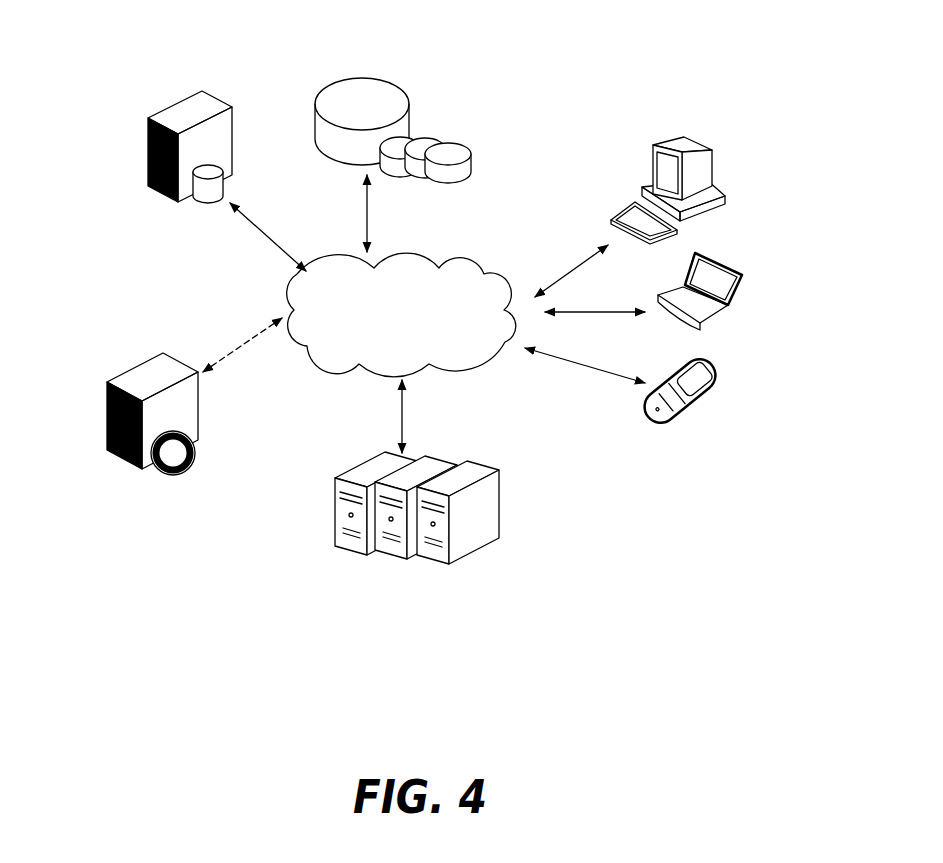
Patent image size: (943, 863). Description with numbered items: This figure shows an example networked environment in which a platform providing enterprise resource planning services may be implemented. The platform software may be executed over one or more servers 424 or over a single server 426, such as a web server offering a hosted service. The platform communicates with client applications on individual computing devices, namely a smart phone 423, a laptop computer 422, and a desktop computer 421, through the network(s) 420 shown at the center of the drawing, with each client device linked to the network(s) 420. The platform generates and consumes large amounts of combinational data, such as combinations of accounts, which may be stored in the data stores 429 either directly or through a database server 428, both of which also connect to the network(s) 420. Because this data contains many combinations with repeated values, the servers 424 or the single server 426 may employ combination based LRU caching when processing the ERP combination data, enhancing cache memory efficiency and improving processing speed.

The network(s) 420 is at (407, 242).
The desktop computer 421 is at (708, 130).
The laptop computer 422 is at (742, 255).
The smart phone 423 is at (713, 365).
The servers 424 is at (367, 453).
The single server 426 is at (130, 365).
The database server 428 is at (202, 212).
The data stores 429 is at (377, 60).